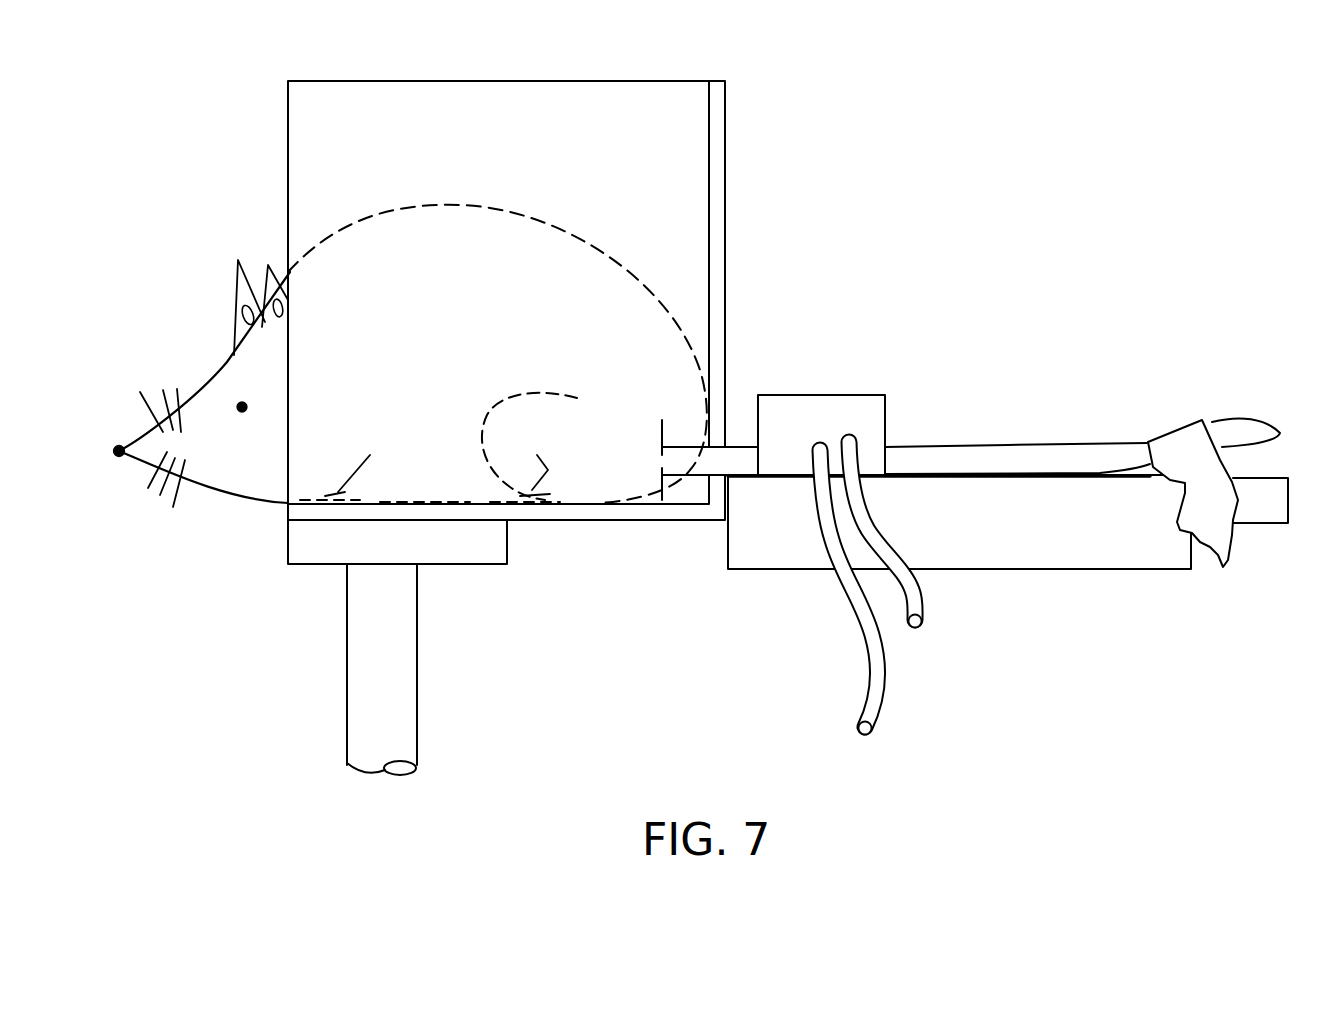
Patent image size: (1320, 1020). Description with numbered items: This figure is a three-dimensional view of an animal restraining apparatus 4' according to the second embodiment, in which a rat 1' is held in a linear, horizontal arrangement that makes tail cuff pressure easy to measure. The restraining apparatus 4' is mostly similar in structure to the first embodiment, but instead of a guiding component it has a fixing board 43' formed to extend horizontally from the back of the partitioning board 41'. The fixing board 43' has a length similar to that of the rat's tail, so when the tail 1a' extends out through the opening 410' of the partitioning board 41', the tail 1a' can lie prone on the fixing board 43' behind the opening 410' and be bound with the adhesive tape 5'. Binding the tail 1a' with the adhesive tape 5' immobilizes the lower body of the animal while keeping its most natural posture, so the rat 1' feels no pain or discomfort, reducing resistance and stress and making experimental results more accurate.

The restraining apparatus 4' is at (791, 411).
The partitioning board 41' is at (553, 283).
The opening 410' is at (679, 460).
The fixing board 43' is at (1008, 543).
The rat 1' is at (410, 356).
The tail 1a' is at (1082, 405).
The adhesive tape 5' is at (1226, 494).